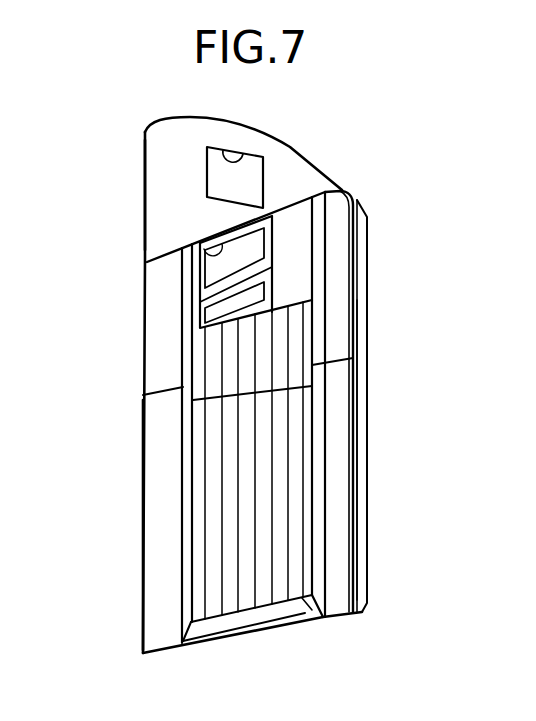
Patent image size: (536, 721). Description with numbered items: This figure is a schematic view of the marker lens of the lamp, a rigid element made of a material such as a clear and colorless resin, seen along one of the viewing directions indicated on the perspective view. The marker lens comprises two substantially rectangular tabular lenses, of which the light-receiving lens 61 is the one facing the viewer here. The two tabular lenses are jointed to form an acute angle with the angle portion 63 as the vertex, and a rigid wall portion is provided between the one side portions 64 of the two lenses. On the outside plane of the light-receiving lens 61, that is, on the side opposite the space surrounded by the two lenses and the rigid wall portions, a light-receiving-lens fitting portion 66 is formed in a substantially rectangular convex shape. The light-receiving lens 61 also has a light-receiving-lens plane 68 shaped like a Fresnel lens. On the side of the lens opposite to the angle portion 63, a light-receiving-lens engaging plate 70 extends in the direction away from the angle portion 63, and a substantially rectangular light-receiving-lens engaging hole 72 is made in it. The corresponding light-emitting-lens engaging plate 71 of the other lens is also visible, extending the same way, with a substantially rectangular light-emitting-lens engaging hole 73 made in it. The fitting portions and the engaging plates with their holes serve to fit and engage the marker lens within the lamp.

The light-receiving lens 61 is at (163, 433).
The angle portion 63 is at (267, 630).
The side portions 64 is at (143, 520).
The light-receiving-lens fitting portion 66 is at (305, 417).
The light-receiving-lens plane 68 is at (262, 540).
The light-receiving-lens engaging plate 70 is at (337, 265).
The light-emitting-lens engaging plate 71 is at (163, 171).
The light-receiving-lens engaging hole 72 is at (193, 248).
The light-emitting-lens engaging hole 73 is at (222, 150).